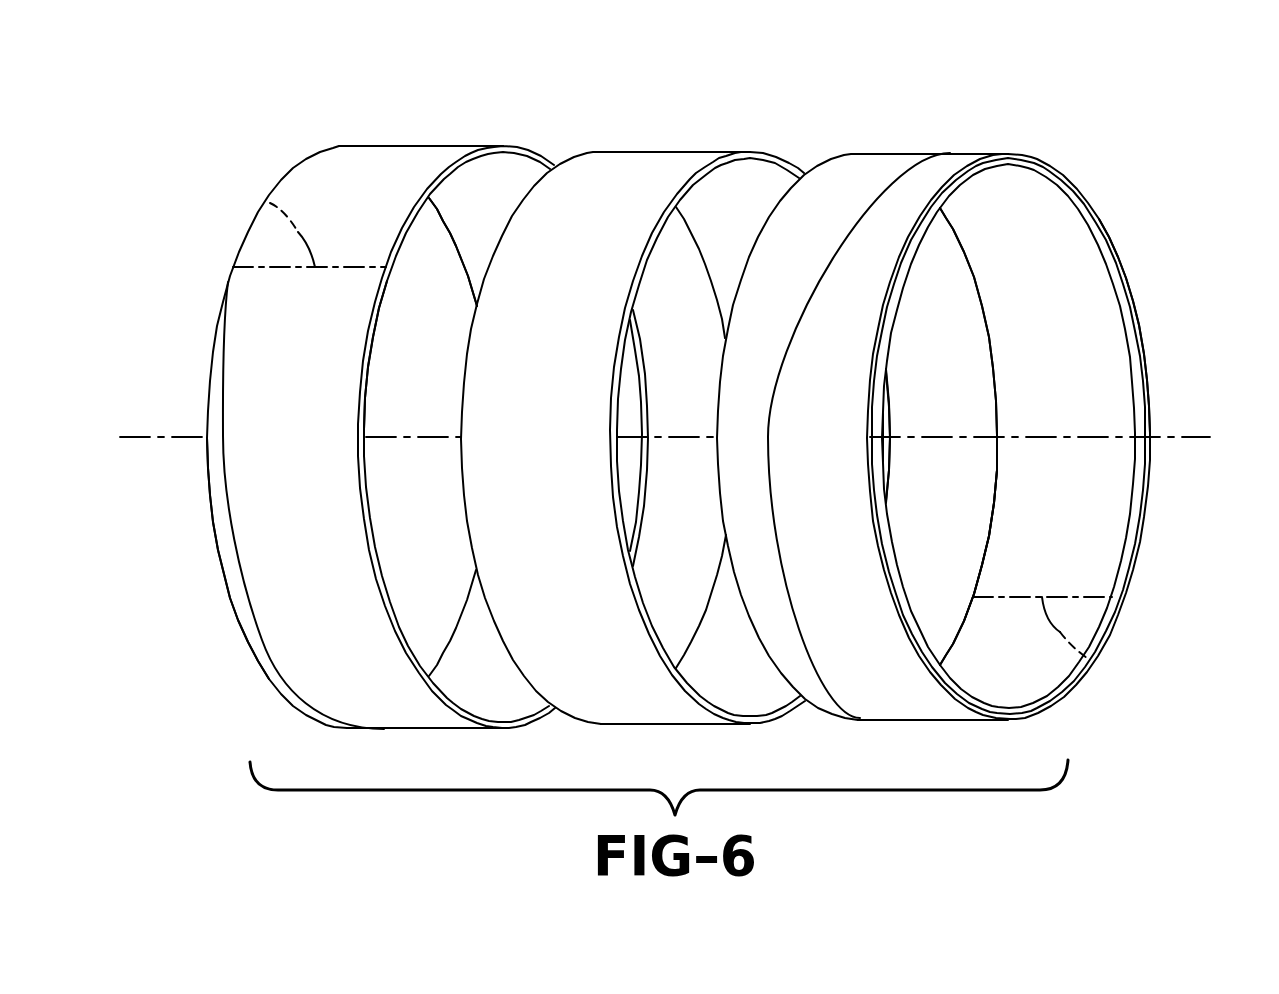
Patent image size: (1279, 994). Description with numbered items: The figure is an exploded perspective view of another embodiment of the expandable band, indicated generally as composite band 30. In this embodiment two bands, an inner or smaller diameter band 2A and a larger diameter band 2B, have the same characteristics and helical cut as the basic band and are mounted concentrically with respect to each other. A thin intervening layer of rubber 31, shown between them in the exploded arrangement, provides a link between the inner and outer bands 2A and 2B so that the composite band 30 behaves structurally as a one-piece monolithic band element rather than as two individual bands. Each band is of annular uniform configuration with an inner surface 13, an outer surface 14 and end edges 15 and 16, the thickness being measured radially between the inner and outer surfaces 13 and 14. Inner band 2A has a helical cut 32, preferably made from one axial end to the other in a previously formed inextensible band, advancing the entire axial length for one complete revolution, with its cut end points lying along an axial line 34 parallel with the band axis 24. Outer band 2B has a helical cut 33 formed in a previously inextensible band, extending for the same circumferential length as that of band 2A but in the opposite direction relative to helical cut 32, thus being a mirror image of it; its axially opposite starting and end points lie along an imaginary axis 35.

The composite band 30 is at (686, 381).
The inner band 2A is at (957, 407).
The outer band 2B is at (405, 409).
The intervening layer of rubber 31 is at (643, 157).
The inner surface 13 is at (480, 185).
The outer surface 14 is at (312, 186).
The end edge 15 is at (382, 580).
The end edge 16 is at (262, 668).
The helical cut 32 is at (1098, 280).
The helical cut 33 is at (263, 610).
The axial line 34 is at (1090, 660).
The imaginary axis 35 is at (270, 203).
The band axis 24 is at (1178, 450).